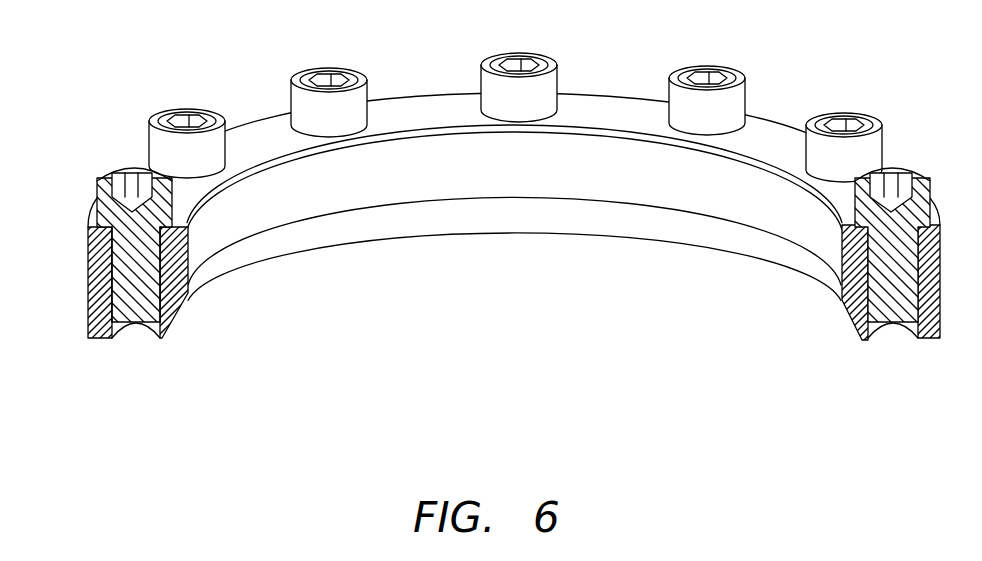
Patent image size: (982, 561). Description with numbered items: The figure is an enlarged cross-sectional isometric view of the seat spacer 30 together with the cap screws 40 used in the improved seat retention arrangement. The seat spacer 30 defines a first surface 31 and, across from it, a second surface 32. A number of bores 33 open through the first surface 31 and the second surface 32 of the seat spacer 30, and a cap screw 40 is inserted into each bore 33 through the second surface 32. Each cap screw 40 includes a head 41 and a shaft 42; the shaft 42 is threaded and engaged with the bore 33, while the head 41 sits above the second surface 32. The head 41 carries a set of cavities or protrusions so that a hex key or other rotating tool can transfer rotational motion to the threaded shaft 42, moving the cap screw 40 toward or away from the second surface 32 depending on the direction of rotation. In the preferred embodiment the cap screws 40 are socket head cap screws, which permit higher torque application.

The seat spacer 30 is at (88, 297).
The first surface of the seat spacer 31 is at (110, 340).
The second surface of the seat spacer 32 is at (257, 121).
The bore 33 is at (170, 300).
The cap screw 40 is at (167, 243).
The head 41 is at (97, 197).
The shaft 42 is at (90, 272).